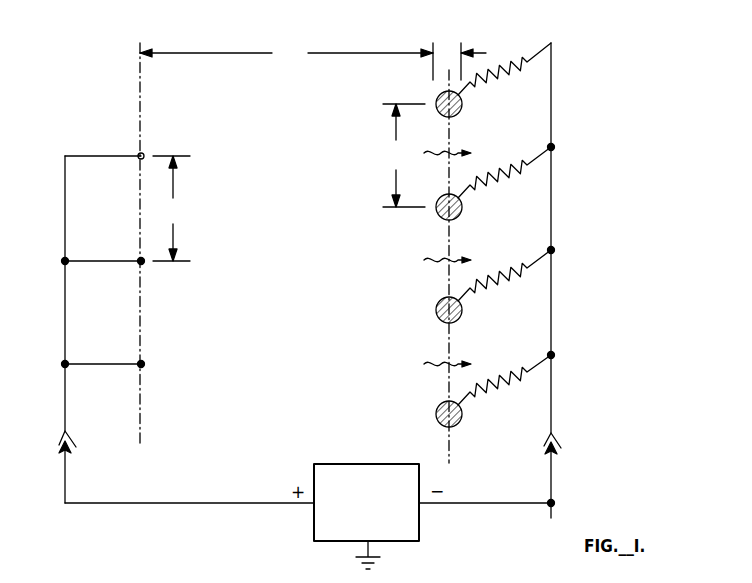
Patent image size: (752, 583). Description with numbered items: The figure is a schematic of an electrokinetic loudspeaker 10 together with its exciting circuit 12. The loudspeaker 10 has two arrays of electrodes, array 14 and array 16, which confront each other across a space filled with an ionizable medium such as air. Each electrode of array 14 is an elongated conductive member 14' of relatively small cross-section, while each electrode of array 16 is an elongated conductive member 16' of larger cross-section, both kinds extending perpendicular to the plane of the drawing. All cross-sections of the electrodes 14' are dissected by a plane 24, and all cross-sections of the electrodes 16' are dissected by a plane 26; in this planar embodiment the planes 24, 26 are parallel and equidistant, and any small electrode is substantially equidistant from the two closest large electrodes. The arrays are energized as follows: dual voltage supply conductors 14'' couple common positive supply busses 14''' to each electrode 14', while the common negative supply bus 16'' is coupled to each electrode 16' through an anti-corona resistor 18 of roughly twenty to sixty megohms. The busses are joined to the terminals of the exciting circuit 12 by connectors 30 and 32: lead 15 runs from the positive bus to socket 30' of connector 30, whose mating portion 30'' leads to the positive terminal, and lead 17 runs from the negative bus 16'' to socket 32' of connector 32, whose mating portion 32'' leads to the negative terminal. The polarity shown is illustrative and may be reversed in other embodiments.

The electrokinetic loudspeaker 10 is at (132, 133).
The exciting circuit 12 is at (372, 464).
The array of electrodes 14 is at (106, 279).
The elongated conductive member 14' is at (168, 261).
The dual voltage supply conductors 14'' is at (102, 276).
The common positive supply busses 14''' is at (39, 260).
The lead 15 is at (63, 407).
The array of electrodes 16 is at (516, 253).
The elongated conductive member 16' is at (468, 268).
The common negative supply bus 16'' is at (574, 201).
The lead 17 is at (552, 377).
The anti-corona resistor 18 is at (498, 80).
The plane 24 is at (143, 437).
The plane 26 is at (448, 441).
The connector 30 is at (68, 469).
The socket 30' is at (50, 441).
The plug 30'' is at (88, 472).
The connector 32 is at (552, 475).
The socket 32' is at (528, 448).
The plug 32'' is at (575, 480).